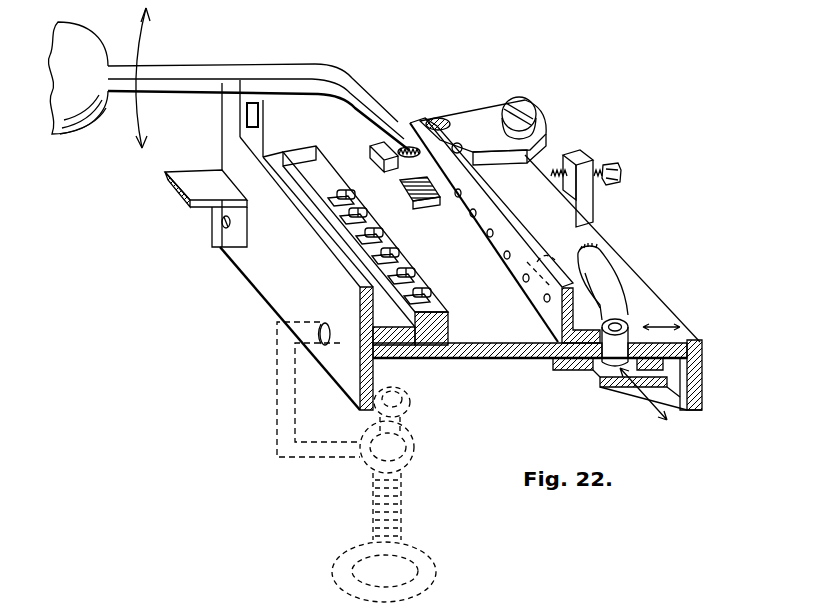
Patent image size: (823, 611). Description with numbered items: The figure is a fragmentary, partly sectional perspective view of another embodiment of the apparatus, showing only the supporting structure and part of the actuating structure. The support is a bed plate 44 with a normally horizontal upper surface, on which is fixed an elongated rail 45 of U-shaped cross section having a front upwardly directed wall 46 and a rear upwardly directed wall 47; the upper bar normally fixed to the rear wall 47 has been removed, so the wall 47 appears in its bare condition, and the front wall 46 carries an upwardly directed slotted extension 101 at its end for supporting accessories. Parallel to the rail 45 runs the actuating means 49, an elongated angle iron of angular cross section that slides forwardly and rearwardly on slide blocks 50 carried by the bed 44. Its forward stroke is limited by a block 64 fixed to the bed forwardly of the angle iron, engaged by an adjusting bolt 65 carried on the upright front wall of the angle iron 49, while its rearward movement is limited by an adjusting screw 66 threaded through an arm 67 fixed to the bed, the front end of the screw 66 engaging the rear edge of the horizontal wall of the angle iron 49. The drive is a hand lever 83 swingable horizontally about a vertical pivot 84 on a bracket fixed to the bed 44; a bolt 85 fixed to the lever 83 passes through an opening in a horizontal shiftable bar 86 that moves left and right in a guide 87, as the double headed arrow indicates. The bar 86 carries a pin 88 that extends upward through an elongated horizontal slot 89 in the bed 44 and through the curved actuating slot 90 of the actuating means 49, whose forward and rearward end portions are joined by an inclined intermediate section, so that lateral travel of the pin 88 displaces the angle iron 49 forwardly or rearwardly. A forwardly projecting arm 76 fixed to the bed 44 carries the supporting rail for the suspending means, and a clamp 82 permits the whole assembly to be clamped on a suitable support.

The hand lever 83 is at (197, 66).
The slotted extension 101 is at (237, 108).
The forwardly projecting arm 76 is at (204, 204).
The elongated rail 45 is at (412, 342).
The front wall 46 is at (400, 358).
The rear wall 47 is at (450, 352).
The slide block 50 is at (433, 209).
The limiting block 64 is at (376, 143).
The adjusting bolt 65 is at (401, 146).
The actuating means 49 is at (424, 122).
The bolt 85 is at (448, 122).
The vertical pivot 84 is at (536, 116).
The bracket 67 is at (580, 160).
The adjusting screw 66 is at (617, 168).
The bed plate 44 is at (530, 356).
The guide 87 is at (582, 375).
The horizontal shiftable bar 86 is at (615, 388).
The pin 88 is at (657, 302).
The elongated horizontal slot 89 is at (632, 286).
The curved actuating slot 90 is at (618, 262).
The clamp 82 is at (278, 428).